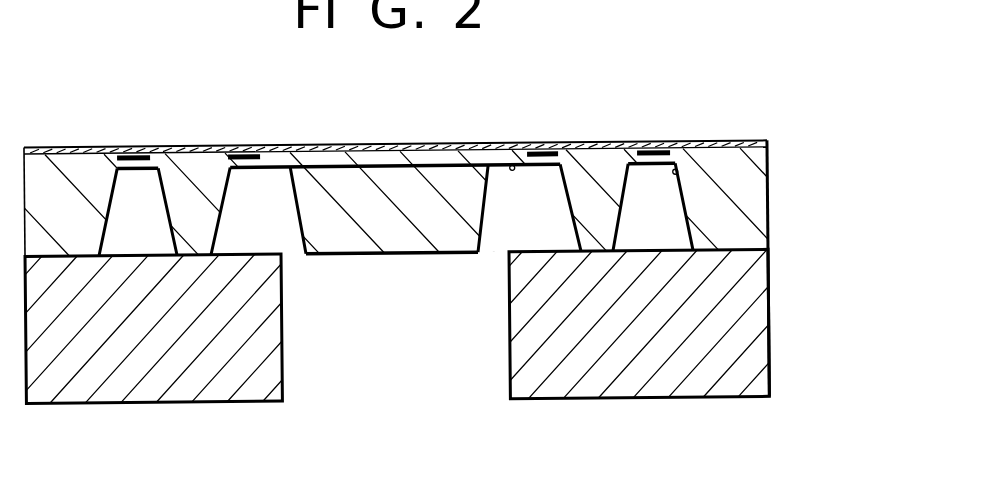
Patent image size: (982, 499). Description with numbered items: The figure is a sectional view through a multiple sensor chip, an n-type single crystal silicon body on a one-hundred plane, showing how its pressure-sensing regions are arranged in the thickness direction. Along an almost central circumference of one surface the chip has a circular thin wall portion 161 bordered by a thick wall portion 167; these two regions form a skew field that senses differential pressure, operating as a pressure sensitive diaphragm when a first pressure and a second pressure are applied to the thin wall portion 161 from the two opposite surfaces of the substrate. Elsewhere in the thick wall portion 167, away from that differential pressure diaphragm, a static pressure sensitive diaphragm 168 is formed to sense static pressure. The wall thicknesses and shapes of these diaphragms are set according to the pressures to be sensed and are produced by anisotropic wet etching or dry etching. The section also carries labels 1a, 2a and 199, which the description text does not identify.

The first electrode 1a is at (548, 152).
The second electrode 2a is at (661, 156).
The thin wall portion 161 is at (511, 165).
The thick wall portion 167 is at (380, 148).
The static pressure sensitive diaphragm 168 is at (113, 160).
The support base 199 is at (767, 315).